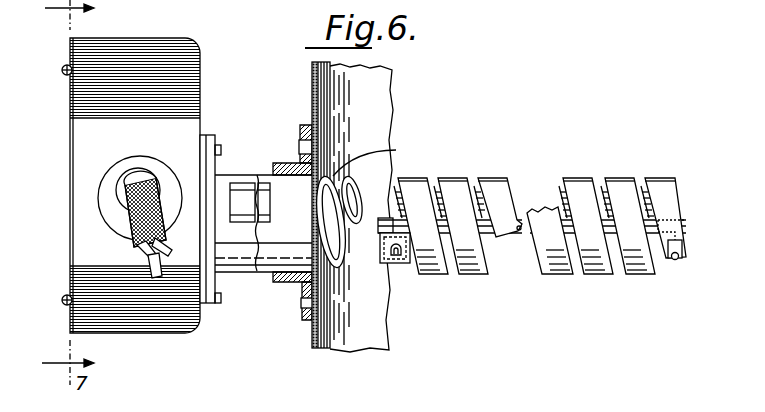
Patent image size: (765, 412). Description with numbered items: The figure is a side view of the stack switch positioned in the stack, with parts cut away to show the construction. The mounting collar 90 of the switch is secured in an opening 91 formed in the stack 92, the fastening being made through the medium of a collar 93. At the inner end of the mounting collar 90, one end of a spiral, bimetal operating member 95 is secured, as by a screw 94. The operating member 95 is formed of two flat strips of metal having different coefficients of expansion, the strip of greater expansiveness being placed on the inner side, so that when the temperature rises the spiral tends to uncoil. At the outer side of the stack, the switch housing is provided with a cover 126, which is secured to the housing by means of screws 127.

The cover 126 is at (82, 46).
The screws 127 is at (62, 70).
The mounting collar 90 is at (272, 274).
The opening 91 is at (365, 208).
The stack 92 is at (312, 68).
The collar 93 is at (306, 163).
The screw 94 is at (399, 260).
The spiral bimetal operating member 95 is at (493, 186).